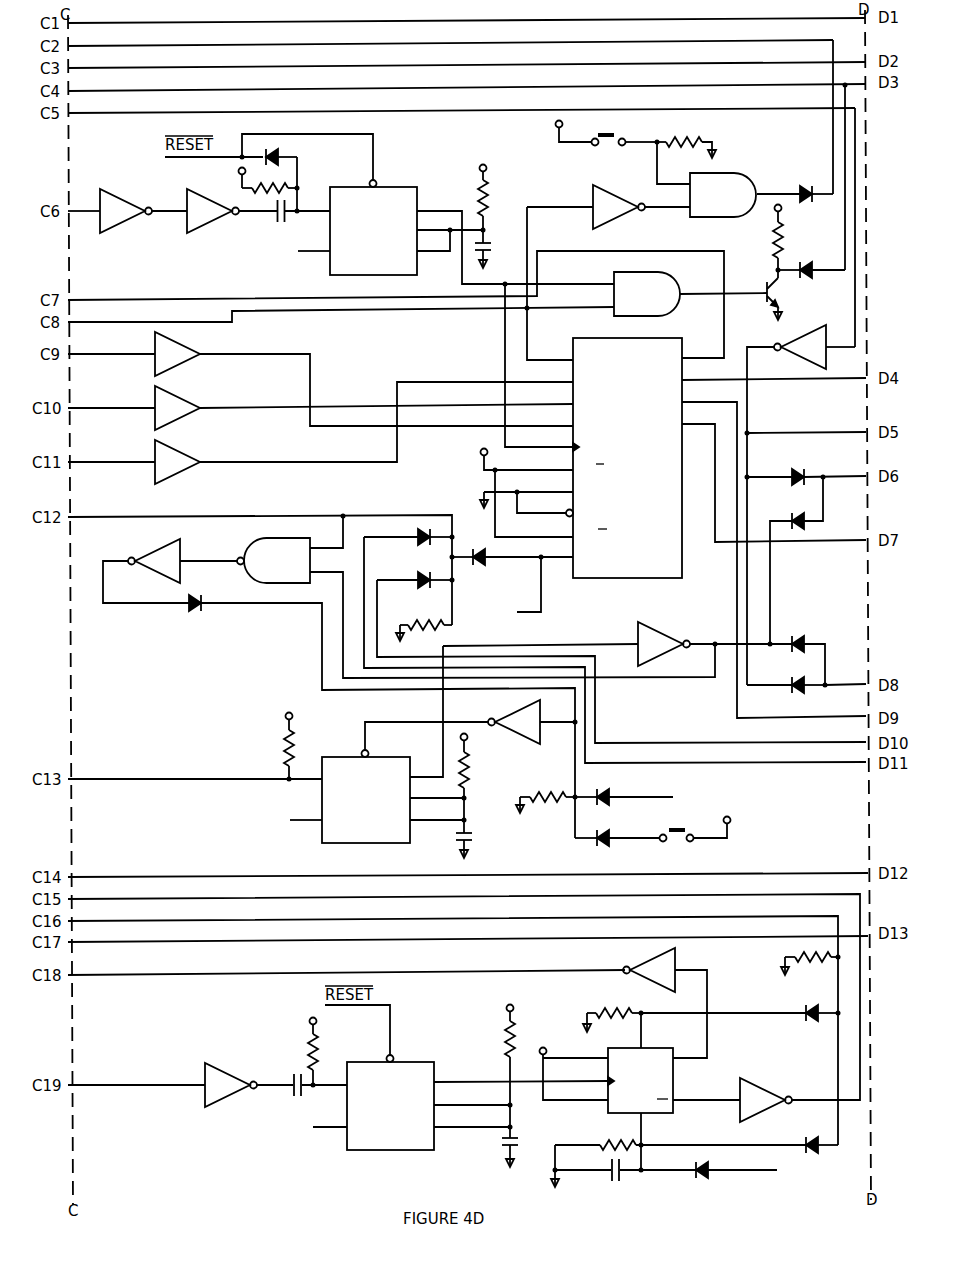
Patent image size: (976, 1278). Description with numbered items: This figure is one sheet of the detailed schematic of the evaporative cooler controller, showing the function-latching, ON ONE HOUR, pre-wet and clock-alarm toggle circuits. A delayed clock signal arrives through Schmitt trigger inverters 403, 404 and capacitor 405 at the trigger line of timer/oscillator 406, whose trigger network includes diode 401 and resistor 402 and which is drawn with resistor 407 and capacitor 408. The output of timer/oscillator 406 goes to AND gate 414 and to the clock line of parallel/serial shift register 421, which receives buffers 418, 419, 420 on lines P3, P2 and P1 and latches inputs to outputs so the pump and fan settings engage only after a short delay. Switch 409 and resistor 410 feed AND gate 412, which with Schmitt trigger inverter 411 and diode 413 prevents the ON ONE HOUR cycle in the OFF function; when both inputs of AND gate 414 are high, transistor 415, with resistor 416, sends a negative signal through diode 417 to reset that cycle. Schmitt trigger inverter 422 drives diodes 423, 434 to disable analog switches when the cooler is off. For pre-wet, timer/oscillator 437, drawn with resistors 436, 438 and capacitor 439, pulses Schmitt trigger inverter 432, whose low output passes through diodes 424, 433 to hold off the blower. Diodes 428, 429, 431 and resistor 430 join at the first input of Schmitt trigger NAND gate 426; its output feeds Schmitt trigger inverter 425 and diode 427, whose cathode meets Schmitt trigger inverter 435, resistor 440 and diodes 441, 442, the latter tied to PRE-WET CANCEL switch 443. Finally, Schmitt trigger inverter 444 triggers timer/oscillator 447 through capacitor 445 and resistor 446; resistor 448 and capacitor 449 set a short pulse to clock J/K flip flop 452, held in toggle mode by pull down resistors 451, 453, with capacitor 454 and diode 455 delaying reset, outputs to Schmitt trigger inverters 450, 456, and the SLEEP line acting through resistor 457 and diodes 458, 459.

The diode 401 is at (289, 176).
The resistor 402 is at (268, 181).
The Schmitt trigger inverter 403 is at (143, 215).
The Schmitt trigger inverter 404 is at (232, 215).
The capacitor 405 is at (302, 221).
The timer/oscillator 406 is at (456, 317).
The ON ONE HOUR switch 407 is at (500, 204).
The capacitor 408 is at (498, 257).
The switch 409 is at (607, 144).
The resistor 410 is at (686, 160).
The Schmitt trigger inverter 411 is at (608, 272).
The AND gate 412 is at (745, 207).
The diode 413 is at (815, 183).
The AND gate 414 is at (690, 285).
The transistor 415 is at (759, 296).
The resistor 416 is at (762, 239).
The diode 417 is at (811, 279).
The buffer 418 is at (364, 377).
The buffer 419 is at (364, 406).
The buffer 420 is at (364, 433).
The parallel/serial shift register 421 is at (581, 448).
The Schmitt trigger inverter 422 is at (800, 505).
The diode 423 is at (806, 485).
The diode 424 is at (790, 560).
The Schmitt trigger inverter 425 is at (170, 563).
The Schmitt trigger NAND gate 426 is at (476, 597).
The diode 427 is at (382, 705).
The diode 428 is at (615, 646).
The diode 429 is at (621, 657).
The resistor 430 is at (424, 636).
The diode 431 is at (512, 580).
The Schmitt trigger inverter 432 is at (617, 640).
The diode 433 is at (806, 662).
The diode 434 is at (786, 698).
The Schmitt trigger inverter 435 is at (469, 728).
The resistor 436 is at (272, 746).
The timer/oscillator 437 is at (377, 755).
The resistor 438 is at (482, 784).
The capacitor 439 is at (483, 843).
The resistor 440 is at (556, 794).
The diode 441 is at (633, 787).
The diode 442 is at (617, 852).
The PRE-WET CANCEL switch 443 is at (695, 841).
The Schmitt trigger inverter 444 is at (249, 1090).
The capacitor 445 is at (317, 1096).
The resistor 446 is at (296, 1052).
The timer/oscillator 447 is at (463, 1117).
The resistor 448 is at (493, 1072).
The capacitor 449 is at (491, 1149).
The Schmitt trigger inverter 450 is at (665, 1003).
The pull down resistor 451 is at (694, 1028).
The J/K flip flop 452 is at (610, 1110).
The pull down resistor 453 is at (678, 1155).
The capacitor 454 is at (625, 1180).
The diode 455 is at (733, 1177).
The Schmitt trigger inverter 456 is at (734, 1105).
The resistor 457 is at (811, 968).
The diode 458 is at (820, 1026).
The diode 459 is at (821, 1158).